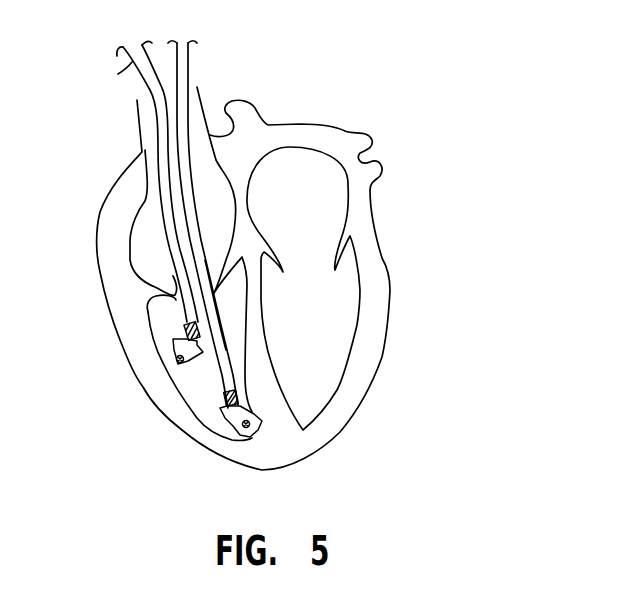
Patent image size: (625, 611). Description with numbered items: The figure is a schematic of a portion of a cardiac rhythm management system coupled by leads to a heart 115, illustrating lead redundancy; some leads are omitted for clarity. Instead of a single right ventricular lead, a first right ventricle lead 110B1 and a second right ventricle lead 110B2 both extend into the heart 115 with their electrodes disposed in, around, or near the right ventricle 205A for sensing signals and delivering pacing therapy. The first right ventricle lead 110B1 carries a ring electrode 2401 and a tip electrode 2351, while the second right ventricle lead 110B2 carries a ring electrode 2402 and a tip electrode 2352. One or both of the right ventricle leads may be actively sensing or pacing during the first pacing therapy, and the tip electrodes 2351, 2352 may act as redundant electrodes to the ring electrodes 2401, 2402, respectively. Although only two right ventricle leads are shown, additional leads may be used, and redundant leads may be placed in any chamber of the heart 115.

The heart 115 is at (383, 260).
The first right ventricle lead 110B1 is at (189, 62).
The second right ventricle lead 110B2 is at (132, 182).
The right ventricle 205A is at (227, 293).
The ring electrode 2401 is at (224, 402).
The ring electrode 2402 is at (186, 328).
The tip electrode 2351 is at (243, 428).
The tip electrode 2352 is at (175, 358).